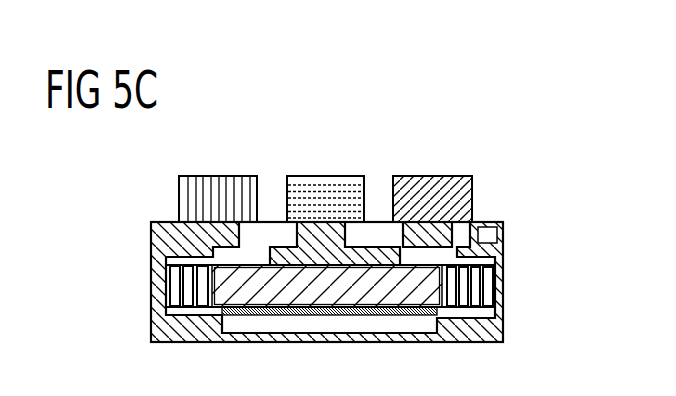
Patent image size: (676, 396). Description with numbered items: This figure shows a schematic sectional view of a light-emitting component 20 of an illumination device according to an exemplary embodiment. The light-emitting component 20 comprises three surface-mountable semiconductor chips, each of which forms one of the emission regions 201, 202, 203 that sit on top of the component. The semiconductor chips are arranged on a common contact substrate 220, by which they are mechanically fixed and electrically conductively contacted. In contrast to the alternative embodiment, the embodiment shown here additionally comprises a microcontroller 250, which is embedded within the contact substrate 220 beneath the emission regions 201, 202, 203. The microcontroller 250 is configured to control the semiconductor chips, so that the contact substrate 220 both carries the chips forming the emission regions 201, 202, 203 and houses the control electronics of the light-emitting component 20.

The light-emitting component 20 is at (116, 258).
The emission region 201 is at (218, 181).
The emission region 202 is at (433, 185).
The emission region 203 is at (327, 185).
The contact substrate 220 is at (480, 229).
The microcontroller 250 is at (350, 297).